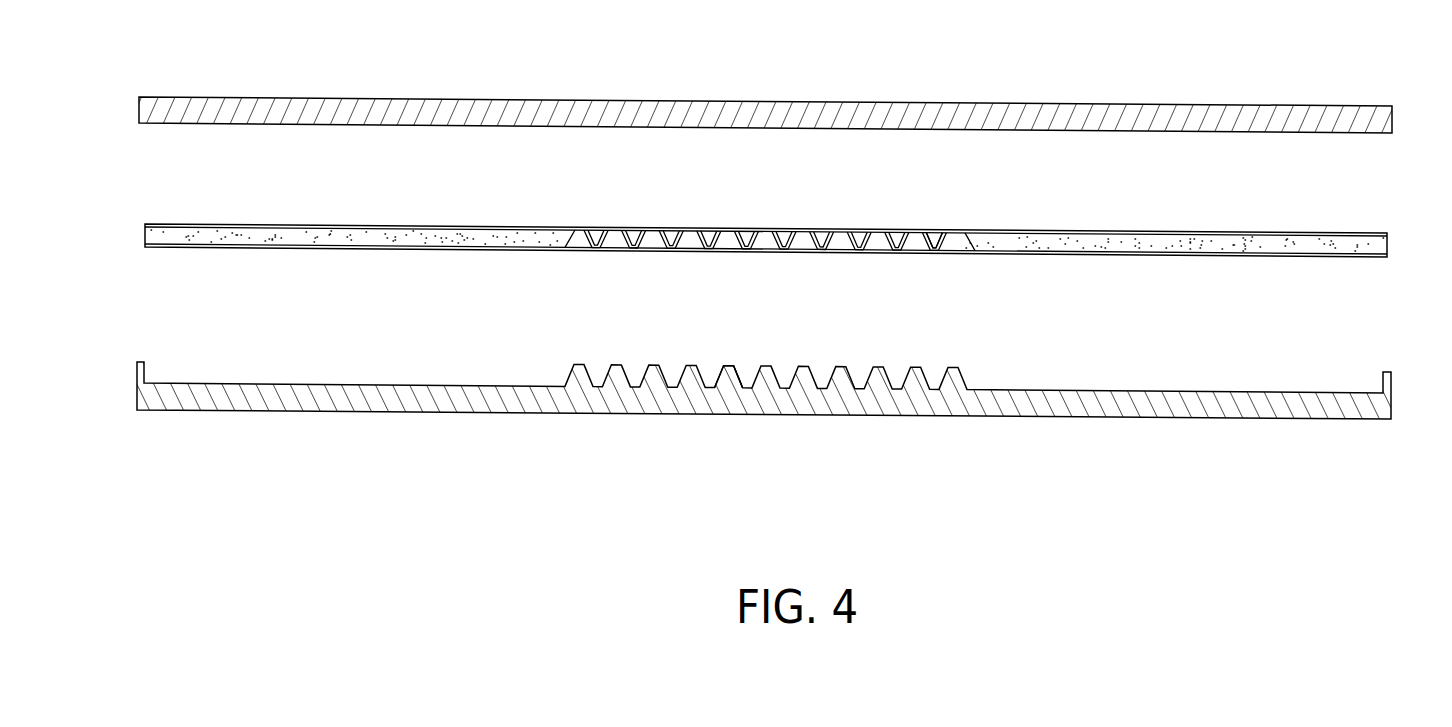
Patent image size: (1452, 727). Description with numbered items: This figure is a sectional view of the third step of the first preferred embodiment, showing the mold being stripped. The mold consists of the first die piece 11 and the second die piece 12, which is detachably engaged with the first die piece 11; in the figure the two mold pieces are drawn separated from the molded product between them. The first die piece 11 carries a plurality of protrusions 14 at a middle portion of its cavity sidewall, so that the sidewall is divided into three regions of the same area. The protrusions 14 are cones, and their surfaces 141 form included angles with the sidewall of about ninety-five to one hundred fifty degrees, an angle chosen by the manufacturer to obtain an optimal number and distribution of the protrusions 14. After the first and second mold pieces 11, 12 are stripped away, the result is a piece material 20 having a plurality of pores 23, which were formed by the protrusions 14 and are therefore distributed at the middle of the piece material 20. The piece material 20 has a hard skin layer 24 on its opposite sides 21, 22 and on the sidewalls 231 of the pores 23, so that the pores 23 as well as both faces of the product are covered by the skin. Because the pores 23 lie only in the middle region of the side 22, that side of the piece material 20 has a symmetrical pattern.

The first die piece 11 is at (1203, 104).
The second die piece 12 is at (764, 384).
The protrusions 14 is at (727, 378).
The surfaces of the protrusions 141 is at (739, 385).
The piece material 20 is at (764, 237).
The side of the piece material 21 is at (164, 226).
The side of the piece material 22 is at (160, 247).
The pores 23 is at (949, 249).
The sidewalls of the pores 231 is at (921, 248).
The hard skin layer 24 is at (1299, 233).